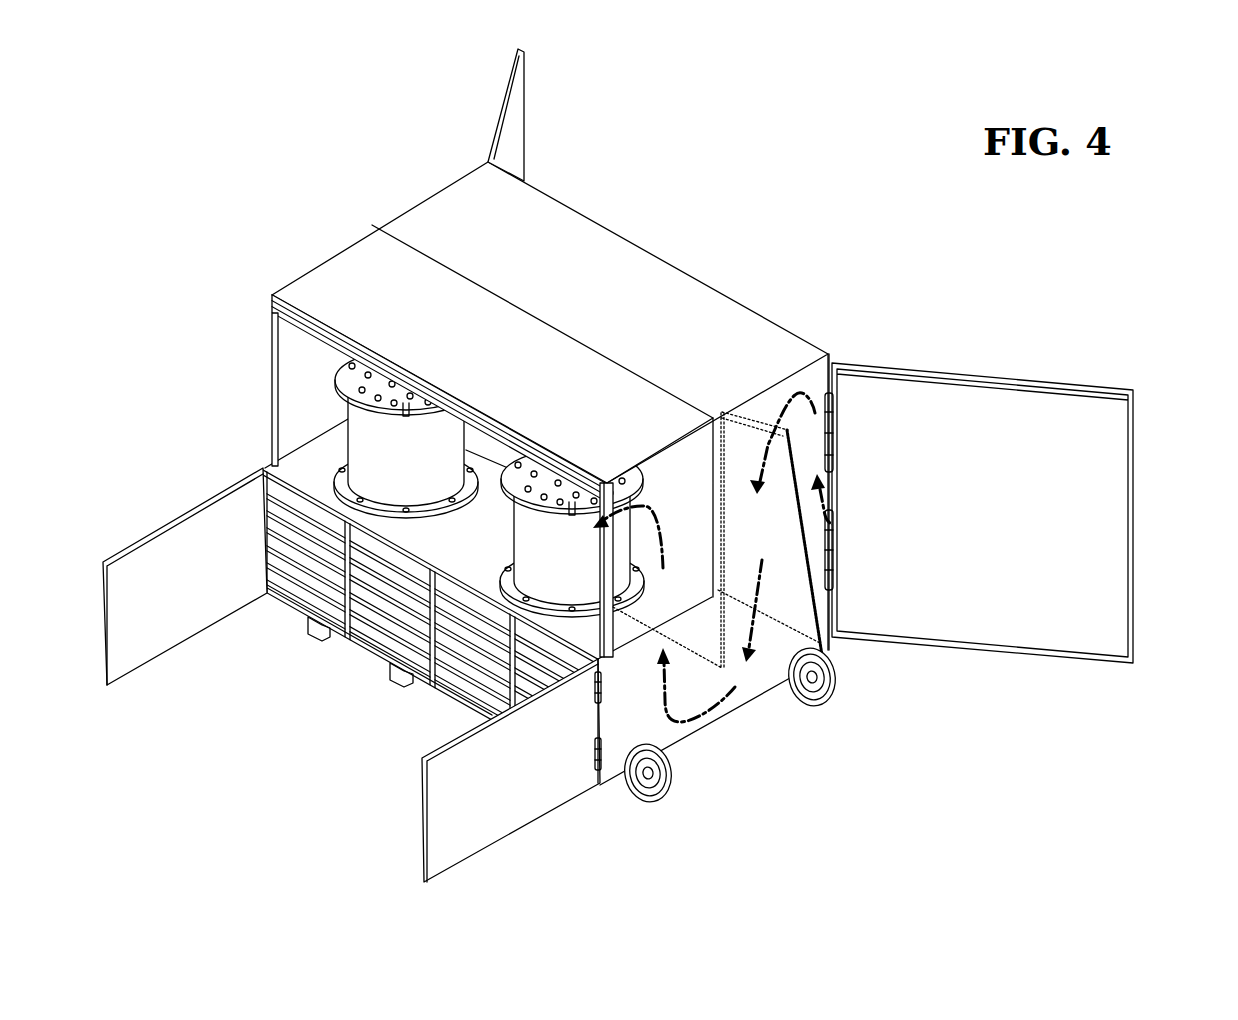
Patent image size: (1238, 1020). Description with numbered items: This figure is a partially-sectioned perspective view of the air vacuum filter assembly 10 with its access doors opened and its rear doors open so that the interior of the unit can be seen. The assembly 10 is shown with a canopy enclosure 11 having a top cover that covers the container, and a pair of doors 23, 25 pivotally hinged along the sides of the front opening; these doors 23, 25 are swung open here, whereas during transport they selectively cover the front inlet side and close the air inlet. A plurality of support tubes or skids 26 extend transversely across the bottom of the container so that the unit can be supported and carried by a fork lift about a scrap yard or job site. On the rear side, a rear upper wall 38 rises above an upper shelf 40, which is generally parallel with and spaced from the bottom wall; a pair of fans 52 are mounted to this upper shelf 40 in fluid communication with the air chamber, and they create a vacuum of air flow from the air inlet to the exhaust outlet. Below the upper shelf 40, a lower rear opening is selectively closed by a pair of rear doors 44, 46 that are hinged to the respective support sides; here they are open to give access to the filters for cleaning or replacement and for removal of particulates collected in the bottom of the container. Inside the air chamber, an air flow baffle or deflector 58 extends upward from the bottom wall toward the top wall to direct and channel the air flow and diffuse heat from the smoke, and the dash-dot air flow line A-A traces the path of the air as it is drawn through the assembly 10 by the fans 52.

The air vacuum filter assembly 10 is at (742, 160).
The canopy enclosure 11 is at (427, 186).
The door 23 is at (1112, 512).
The door 25 is at (525, 92).
The support tubes or skids 26 is at (316, 635).
The rear upper wall 38 is at (692, 491).
The upper shelf 40 is at (500, 515).
The rear door 44 is at (510, 815).
The rear door 46 is at (155, 640).
The fans 52 is at (370, 458).
The air flow baffle or deflector 58 is at (800, 552).